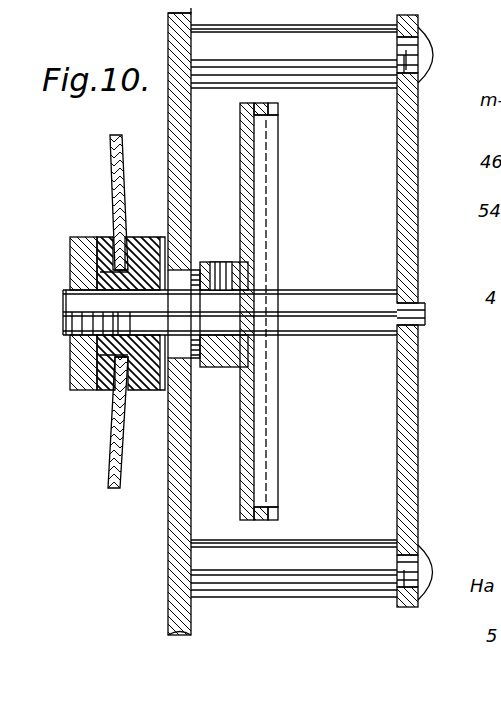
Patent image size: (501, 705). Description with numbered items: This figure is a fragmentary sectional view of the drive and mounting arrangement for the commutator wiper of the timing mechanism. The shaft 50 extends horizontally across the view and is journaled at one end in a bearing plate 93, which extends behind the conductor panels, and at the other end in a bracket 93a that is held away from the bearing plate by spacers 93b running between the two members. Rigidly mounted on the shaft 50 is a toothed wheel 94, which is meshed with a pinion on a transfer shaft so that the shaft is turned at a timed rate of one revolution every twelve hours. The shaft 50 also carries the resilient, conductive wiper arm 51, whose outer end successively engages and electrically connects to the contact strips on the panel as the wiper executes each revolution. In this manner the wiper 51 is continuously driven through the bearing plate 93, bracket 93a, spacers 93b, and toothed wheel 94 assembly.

The shaft 50 is at (62, 312).
The wiper arm 51 is at (116, 208).
The bearing plate 93 is at (184, 510).
The bracket 93a is at (412, 449).
The spacers 93b is at (328, 78).
The toothed wheel 94 is at (278, 512).